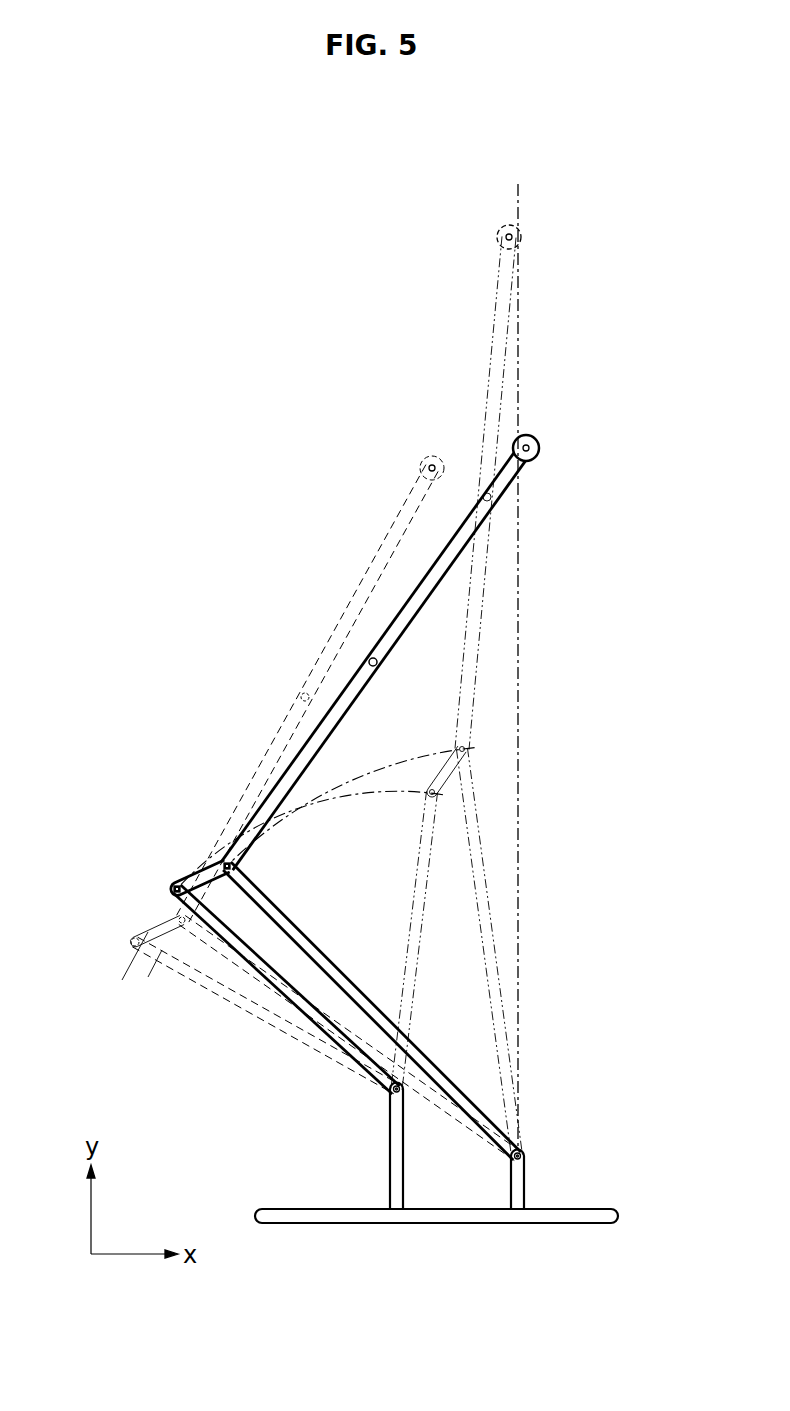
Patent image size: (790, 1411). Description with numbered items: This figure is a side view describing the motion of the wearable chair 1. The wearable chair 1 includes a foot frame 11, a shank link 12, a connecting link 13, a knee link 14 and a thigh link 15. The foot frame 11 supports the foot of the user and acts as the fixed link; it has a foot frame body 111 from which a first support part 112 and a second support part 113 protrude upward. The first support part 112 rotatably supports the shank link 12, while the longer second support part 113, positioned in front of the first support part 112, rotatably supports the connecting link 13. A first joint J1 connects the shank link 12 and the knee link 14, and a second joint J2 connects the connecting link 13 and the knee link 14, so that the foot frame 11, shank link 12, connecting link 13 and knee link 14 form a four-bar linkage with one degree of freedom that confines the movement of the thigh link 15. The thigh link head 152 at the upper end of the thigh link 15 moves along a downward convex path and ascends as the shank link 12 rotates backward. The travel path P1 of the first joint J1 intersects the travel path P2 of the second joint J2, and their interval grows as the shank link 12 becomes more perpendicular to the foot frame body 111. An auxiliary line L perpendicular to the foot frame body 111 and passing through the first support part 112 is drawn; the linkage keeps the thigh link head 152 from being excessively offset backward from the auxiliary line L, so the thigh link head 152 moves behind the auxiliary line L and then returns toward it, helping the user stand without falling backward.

The wearable chair 1 is at (411, 131).
The foot frame 11 is at (458, 1187).
The foot frame body 111 is at (448, 1222).
The first support part 112 is at (516, 1183).
The second support part 113 is at (391, 1145).
The shank link 12 is at (312, 945).
The connecting link 13 is at (288, 993).
The knee link 14 is at (190, 874).
The thigh link 15 is at (407, 602).
The thigh link head 152 is at (539, 443).
The first joint J1 is at (224, 861).
The second joint J2 is at (173, 888).
The travel path of the first joint P1 is at (465, 749).
The travel path of the second joint P2 is at (435, 797).
The auxiliary line L is at (515, 652).